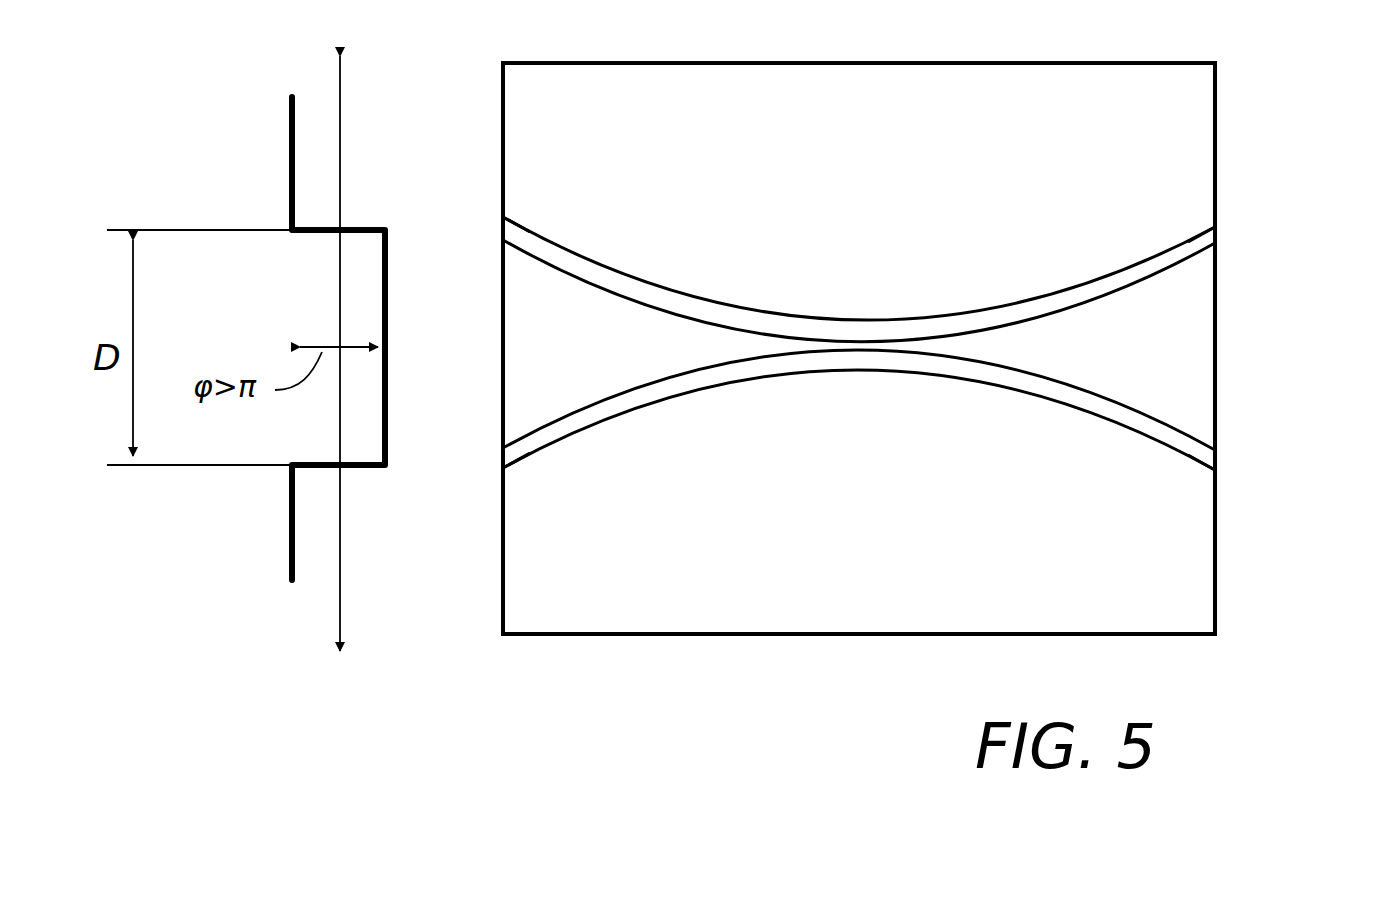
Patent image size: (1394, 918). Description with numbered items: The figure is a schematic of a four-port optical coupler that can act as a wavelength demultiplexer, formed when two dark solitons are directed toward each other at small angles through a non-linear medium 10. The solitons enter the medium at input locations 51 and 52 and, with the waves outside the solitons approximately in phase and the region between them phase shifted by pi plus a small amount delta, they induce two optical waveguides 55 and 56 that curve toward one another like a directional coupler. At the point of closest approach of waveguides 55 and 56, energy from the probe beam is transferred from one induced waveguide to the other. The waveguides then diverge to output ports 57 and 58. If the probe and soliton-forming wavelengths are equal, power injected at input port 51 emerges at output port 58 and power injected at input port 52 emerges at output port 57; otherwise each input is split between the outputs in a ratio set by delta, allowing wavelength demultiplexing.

The non-linear medium 10 is at (695, 98).
The input location 51 is at (503, 225).
The input location 52 is at (503, 460).
The optical waveguide 55 is at (955, 318).
The optical waveguide 56 is at (1033, 380).
The output port 57 is at (1215, 230).
The output port 58 is at (1215, 460).